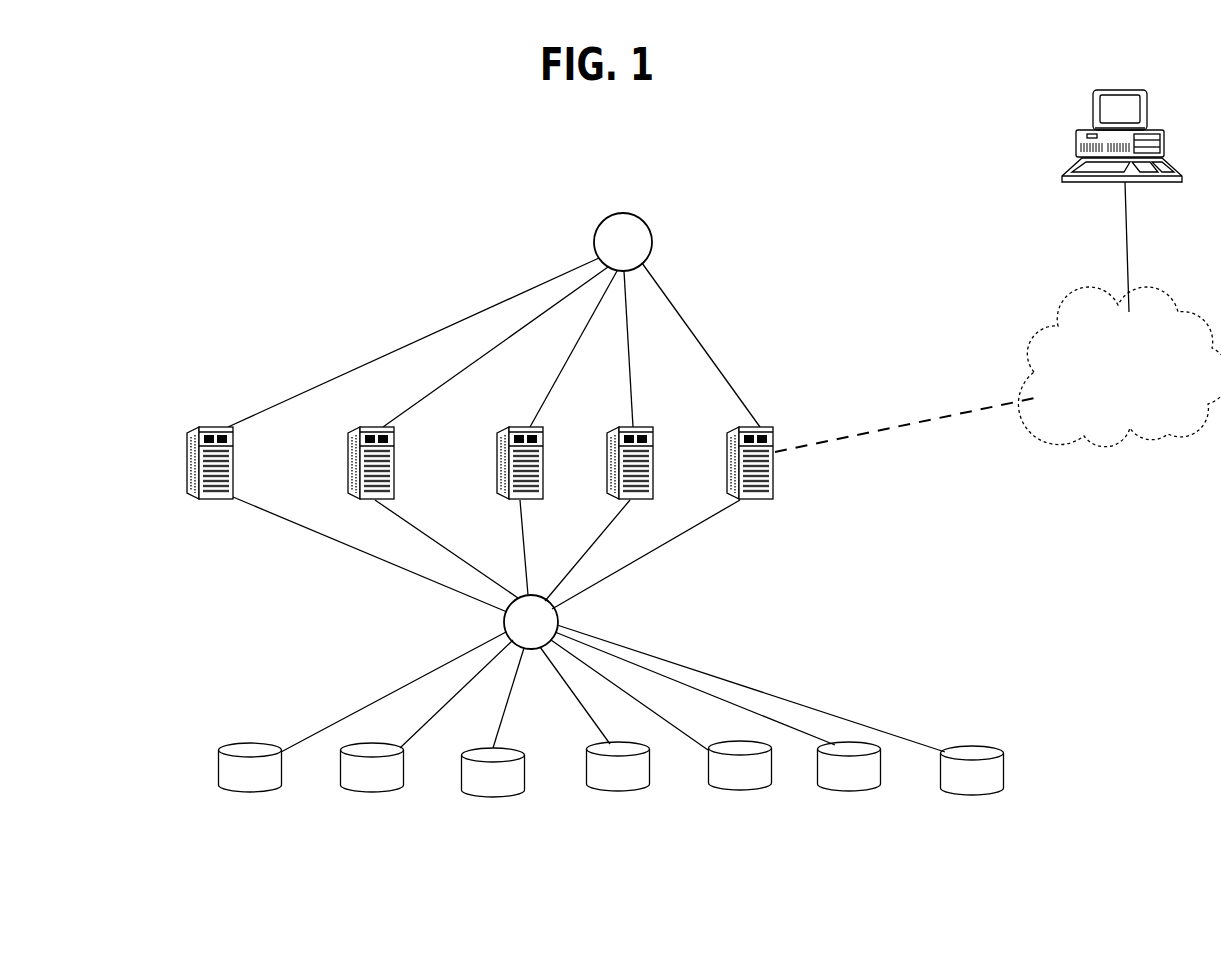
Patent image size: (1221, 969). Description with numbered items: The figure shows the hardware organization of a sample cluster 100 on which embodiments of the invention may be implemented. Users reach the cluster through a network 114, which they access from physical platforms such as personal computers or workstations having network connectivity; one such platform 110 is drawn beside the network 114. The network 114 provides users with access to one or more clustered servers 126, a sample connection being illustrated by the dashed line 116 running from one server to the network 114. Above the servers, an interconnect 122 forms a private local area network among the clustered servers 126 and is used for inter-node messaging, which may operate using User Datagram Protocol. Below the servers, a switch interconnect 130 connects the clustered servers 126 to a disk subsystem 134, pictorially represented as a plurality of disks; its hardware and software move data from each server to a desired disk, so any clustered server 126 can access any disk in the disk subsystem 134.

The cluster 100 is at (183, 200).
The client computer 110 is at (1076, 134).
The network 114 is at (1074, 370).
The dashed line 116 is at (890, 432).
The interconnect 122 is at (607, 252).
The clustered servers 126 is at (190, 463).
The switch interconnect 130 is at (515, 632).
The disk subsystem 134 is at (218, 748).